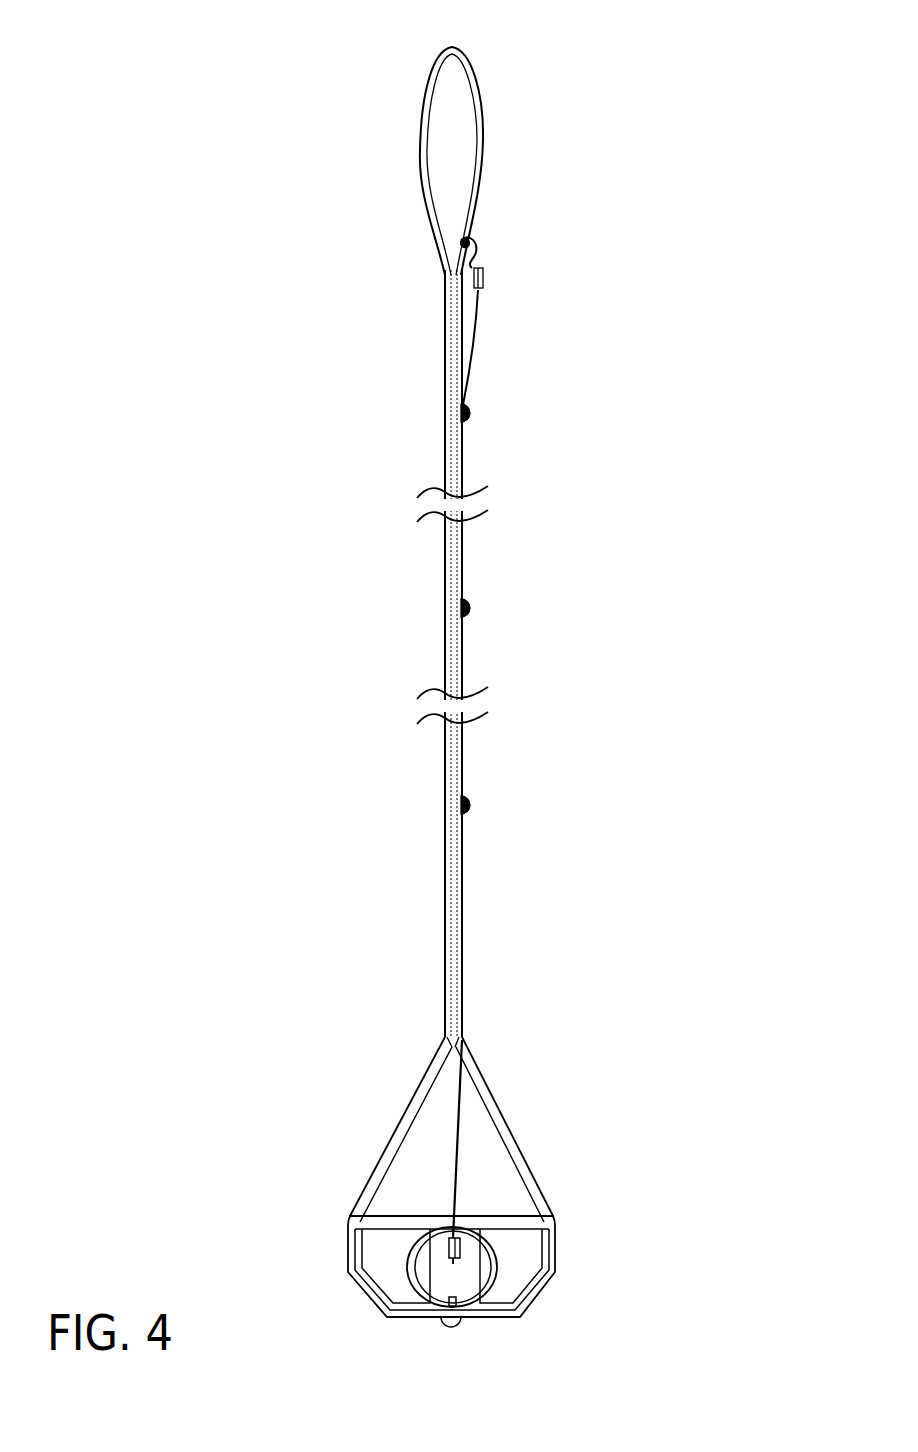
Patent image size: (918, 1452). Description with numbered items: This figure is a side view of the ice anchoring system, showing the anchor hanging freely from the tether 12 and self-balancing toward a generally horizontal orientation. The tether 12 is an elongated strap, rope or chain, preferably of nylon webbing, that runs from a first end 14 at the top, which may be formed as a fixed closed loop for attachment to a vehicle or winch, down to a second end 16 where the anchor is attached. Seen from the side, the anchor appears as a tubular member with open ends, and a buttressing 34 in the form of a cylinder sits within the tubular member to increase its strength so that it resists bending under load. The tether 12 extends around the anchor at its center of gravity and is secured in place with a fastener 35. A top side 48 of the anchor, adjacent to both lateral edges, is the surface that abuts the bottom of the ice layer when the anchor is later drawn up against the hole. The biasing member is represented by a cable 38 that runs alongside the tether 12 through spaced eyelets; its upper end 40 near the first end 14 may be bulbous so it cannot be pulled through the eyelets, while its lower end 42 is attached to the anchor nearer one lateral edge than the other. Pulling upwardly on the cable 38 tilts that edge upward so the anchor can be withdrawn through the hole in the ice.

The tether 12 is at (445, 933).
The first end 14 is at (455, 48).
The second end 16 is at (517, 1320).
The buttressing 34 is at (495, 1268).
The fastener 35 is at (448, 1298).
The cable 38 is at (458, 1128).
The upper end 40 is at (480, 262).
The lower end 42 is at (448, 1250).
The top side 48 is at (498, 1223).